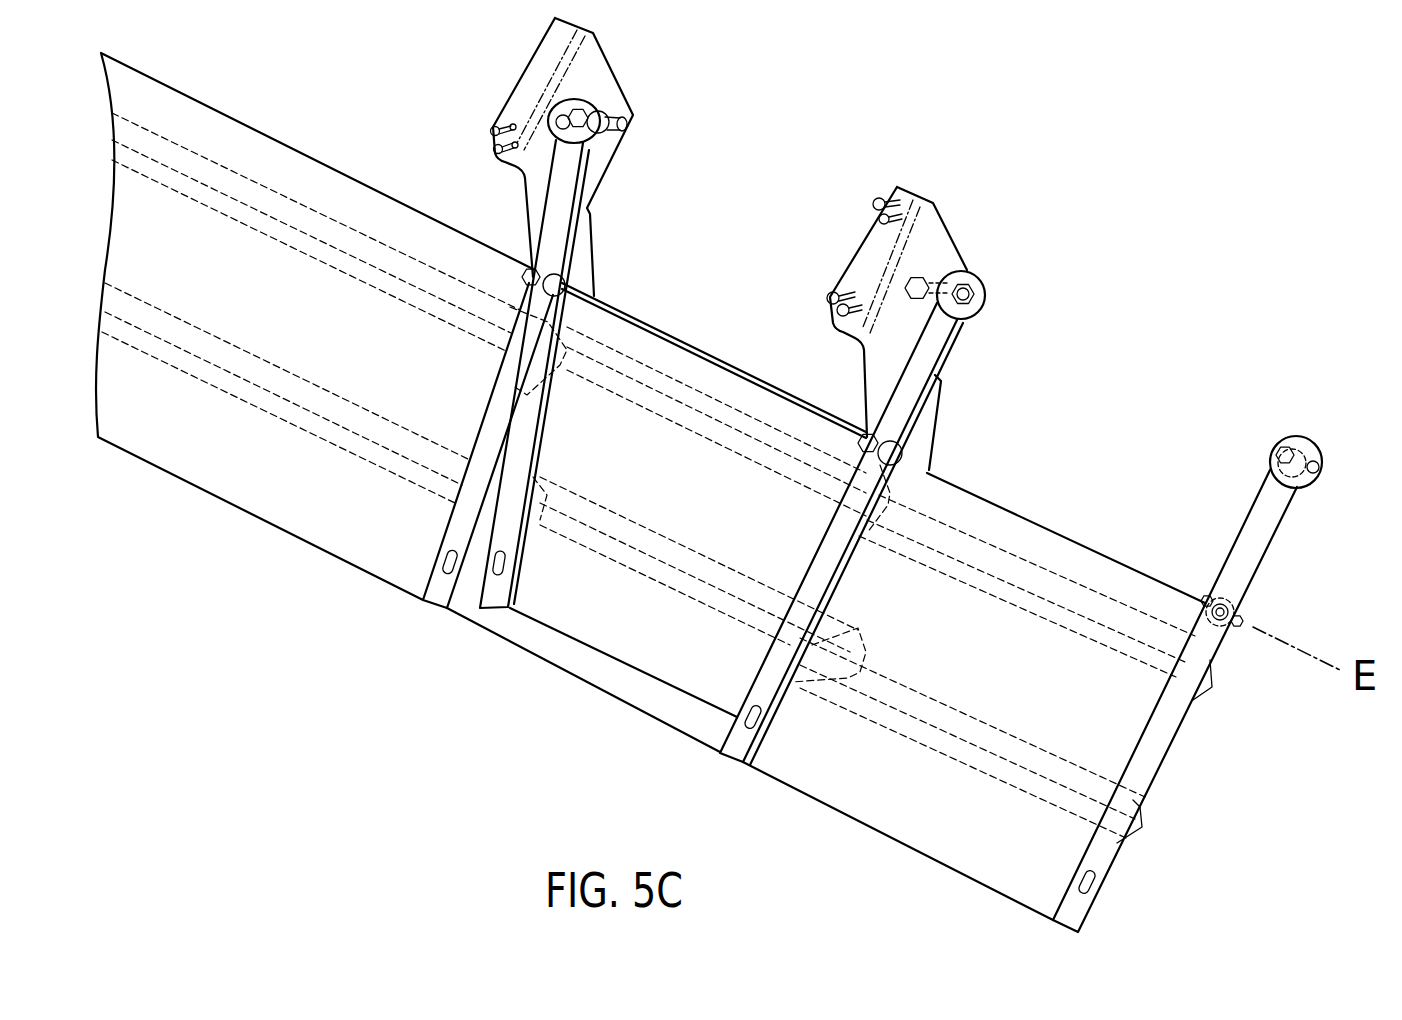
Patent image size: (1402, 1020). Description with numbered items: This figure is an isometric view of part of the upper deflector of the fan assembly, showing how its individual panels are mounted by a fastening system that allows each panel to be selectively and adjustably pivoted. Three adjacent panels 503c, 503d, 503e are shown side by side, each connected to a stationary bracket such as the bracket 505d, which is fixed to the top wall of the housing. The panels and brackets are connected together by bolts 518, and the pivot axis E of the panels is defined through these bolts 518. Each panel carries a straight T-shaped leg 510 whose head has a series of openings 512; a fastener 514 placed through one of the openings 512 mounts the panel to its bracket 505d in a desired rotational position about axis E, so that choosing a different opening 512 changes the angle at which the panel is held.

The panel 503c is at (271, 200).
The panel 503d is at (664, 365).
The panel 503e is at (1040, 540).
The bracket 505d is at (933, 227).
The straight T-shaped leg 510 is at (933, 355).
The openings 512 is at (567, 103).
The fastener 514 is at (982, 297).
The bolt 518 is at (556, 273).